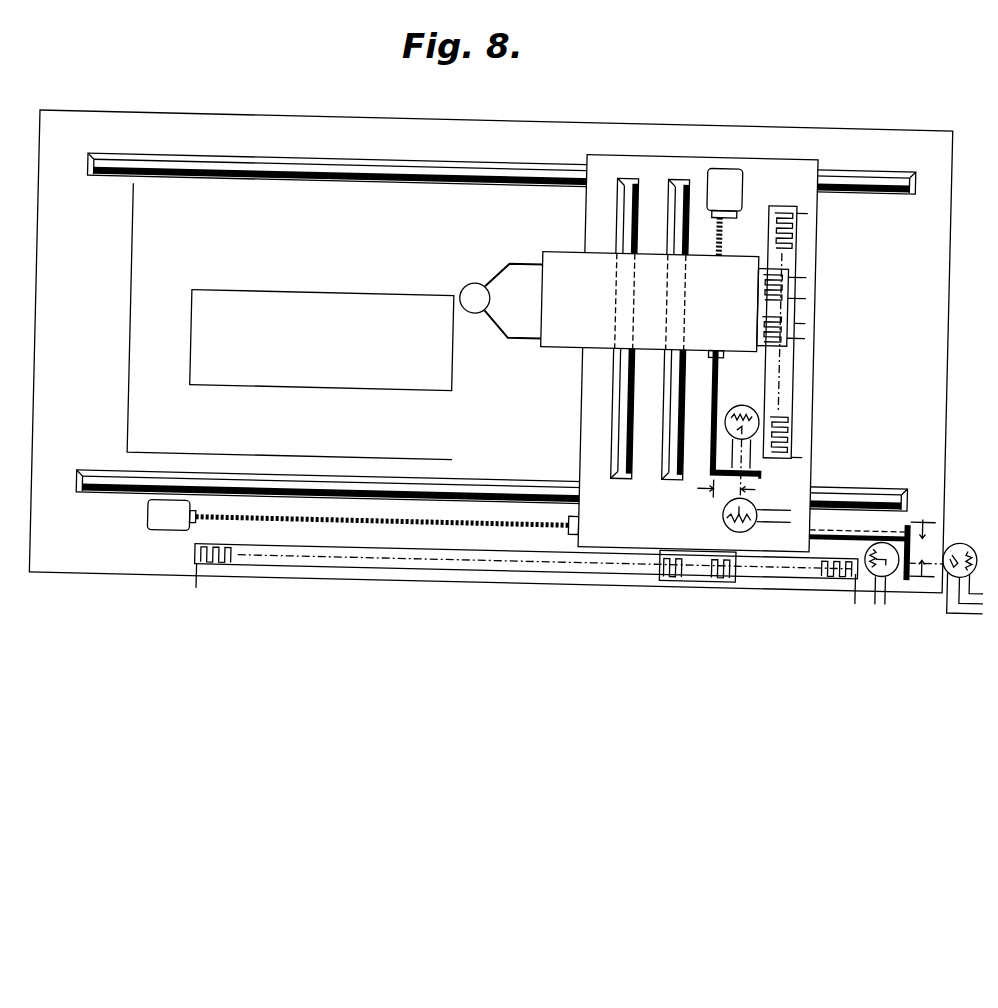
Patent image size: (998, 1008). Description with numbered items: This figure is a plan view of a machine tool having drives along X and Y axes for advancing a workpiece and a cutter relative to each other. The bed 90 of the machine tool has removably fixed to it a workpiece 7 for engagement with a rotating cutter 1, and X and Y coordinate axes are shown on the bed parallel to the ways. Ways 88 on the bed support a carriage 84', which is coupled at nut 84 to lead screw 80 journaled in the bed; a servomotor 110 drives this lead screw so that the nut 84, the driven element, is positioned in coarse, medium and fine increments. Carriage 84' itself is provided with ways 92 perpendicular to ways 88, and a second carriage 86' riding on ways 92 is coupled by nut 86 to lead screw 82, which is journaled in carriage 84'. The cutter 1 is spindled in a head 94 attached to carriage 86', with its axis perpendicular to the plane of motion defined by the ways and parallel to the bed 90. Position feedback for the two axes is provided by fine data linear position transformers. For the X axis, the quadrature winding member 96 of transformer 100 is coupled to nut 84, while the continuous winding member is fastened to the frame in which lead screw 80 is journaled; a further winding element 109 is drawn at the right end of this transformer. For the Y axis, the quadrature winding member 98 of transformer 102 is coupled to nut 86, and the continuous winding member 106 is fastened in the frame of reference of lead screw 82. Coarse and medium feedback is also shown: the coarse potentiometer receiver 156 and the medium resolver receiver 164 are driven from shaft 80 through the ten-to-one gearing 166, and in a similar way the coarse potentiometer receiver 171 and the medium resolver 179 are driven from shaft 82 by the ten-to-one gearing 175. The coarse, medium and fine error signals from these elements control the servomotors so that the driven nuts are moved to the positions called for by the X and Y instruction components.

The bed 90 is at (450, 110).
The workpiece 7 is at (344, 286).
The ways 88 is at (352, 157).
The motor 110 is at (170, 527).
The lead screw 80 is at (419, 516).
The nut 84 is at (553, 518).
The quadrature winding member 96 is at (692, 538).
The fine data linear position transformer 100 is at (674, 568).
The X scale comb 109 is at (838, 562).
The carriage 84' is at (674, 353).
The ways 92 is at (650, 318).
The carriage 86' is at (645, 318).
The head 94 is at (518, 255).
The cutter 1 is at (467, 277).
The lead screw 82 is at (718, 366).
The nut 86 is at (728, 368).
The 10 to 1 gearing 175 is at (768, 462).
The medium potentiometer 179 is at (723, 444).
The coarse potentiometer receiver 171 is at (735, 526).
The continuous winding member 106 is at (799, 229).
The fine data linear position transformer 102 is at (808, 301).
The quadrature winding member 98 is at (792, 319).
The 10 to 1 gearing 166 is at (914, 513).
The coarse potentiometer 156 is at (866, 583).
The medium resolver receiver 164 is at (968, 522).